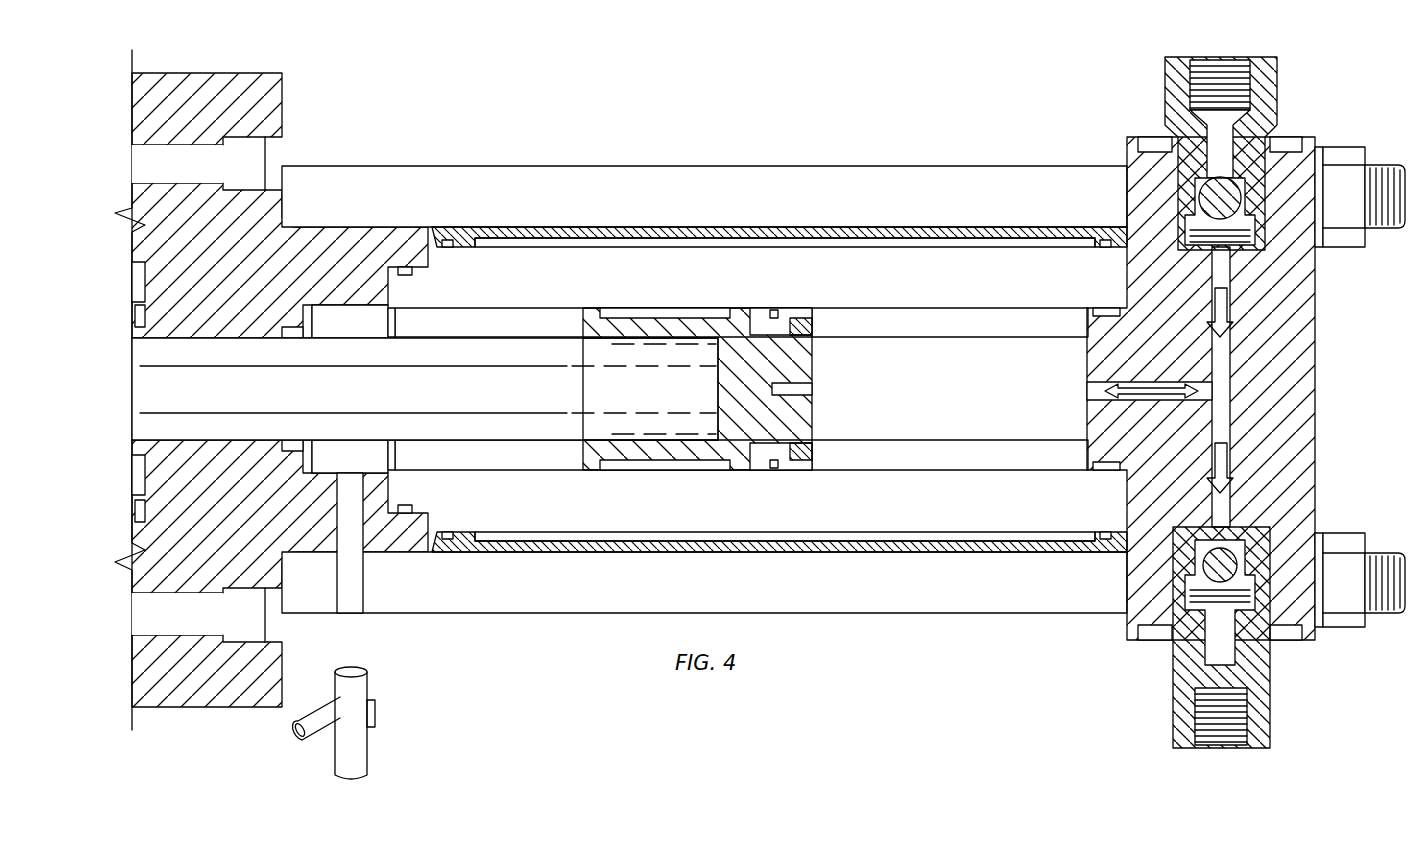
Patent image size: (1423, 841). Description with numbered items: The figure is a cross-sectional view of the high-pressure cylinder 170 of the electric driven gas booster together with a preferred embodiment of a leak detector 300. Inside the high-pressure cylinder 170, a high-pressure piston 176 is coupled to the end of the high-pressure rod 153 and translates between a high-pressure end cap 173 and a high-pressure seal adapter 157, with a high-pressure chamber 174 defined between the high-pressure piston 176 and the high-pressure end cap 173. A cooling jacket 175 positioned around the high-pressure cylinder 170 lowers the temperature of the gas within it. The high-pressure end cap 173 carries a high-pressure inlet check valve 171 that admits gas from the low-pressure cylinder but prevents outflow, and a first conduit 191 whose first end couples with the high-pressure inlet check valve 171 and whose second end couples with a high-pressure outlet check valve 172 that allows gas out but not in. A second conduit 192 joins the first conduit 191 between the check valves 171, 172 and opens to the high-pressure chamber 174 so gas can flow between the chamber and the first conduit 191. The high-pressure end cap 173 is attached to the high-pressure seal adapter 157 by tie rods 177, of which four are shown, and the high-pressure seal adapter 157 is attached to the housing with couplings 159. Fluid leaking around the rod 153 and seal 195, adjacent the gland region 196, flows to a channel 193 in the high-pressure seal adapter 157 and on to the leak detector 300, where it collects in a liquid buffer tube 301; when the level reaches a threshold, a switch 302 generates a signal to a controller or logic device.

The high-pressure seal adapter 157 is at (253, 72).
The couplings 159 is at (132, 160).
The high-pressure rod 153 is at (152, 388).
The seal 195 is at (270, 470).
The rod gland 196 is at (178, 335).
The high-pressure cylinder 170 is at (840, 166).
The tie rods 177 is at (462, 184).
The cooling jacket 175 is at (565, 226).
The high-pressure chamber 174 is at (950, 470).
The high-pressure piston 176 is at (740, 470).
The channel 193 is at (795, 465).
The high-pressure end cap 173 is at (1290, 412).
The high-pressure inlet check valve 171 is at (1278, 122).
The high-pressure outlet check valve 172 is at (1290, 650).
The first conduit 191 is at (1228, 368).
The second conduit 192 is at (1085, 392).
The leak detector 300 is at (336, 734).
The liquid buffer tube 301 is at (352, 776).
The switch 302 is at (377, 714).